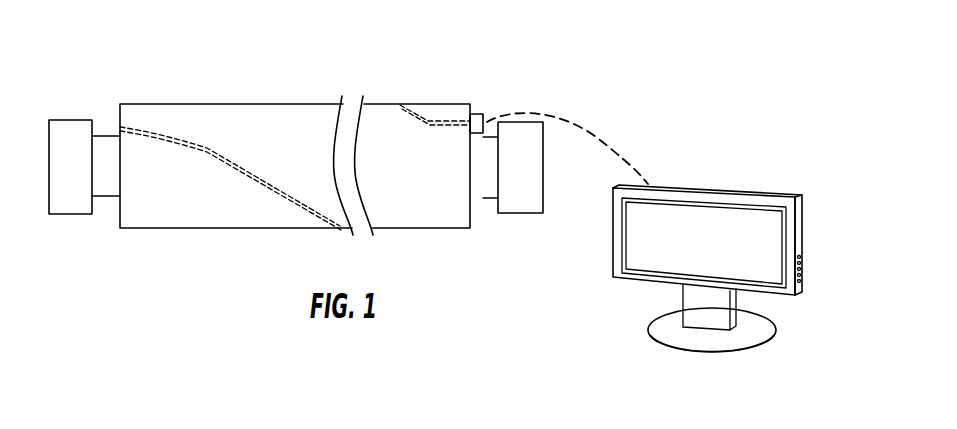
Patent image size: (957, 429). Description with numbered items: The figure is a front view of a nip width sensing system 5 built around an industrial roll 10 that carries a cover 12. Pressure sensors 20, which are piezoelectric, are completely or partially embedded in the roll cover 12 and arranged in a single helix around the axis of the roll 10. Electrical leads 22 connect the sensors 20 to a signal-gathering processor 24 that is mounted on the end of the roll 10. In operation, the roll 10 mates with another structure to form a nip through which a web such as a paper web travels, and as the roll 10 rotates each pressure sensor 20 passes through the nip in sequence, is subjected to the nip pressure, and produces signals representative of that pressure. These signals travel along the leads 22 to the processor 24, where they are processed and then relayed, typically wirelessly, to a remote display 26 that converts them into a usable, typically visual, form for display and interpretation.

The nip width sensing system 5 is at (611, 92).
The roll 10 is at (481, 96).
The cover 12 is at (137, 205).
The pressure sensors 20 is at (429, 118).
The electrical leads 22 is at (235, 167).
The signal-gathering processor 24 is at (458, 115).
The remote display 26 is at (720, 188).